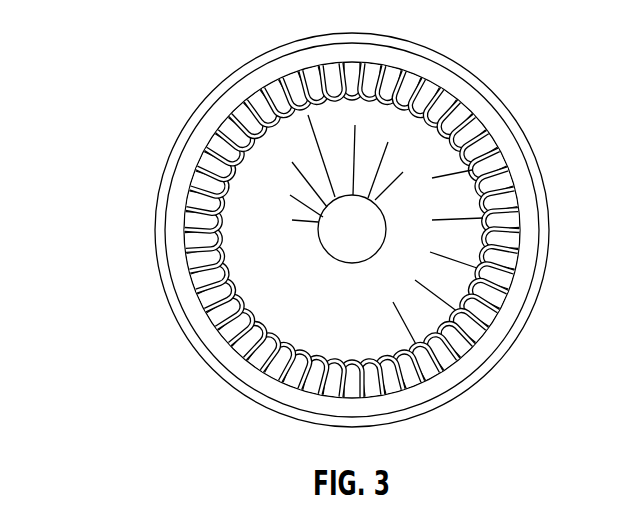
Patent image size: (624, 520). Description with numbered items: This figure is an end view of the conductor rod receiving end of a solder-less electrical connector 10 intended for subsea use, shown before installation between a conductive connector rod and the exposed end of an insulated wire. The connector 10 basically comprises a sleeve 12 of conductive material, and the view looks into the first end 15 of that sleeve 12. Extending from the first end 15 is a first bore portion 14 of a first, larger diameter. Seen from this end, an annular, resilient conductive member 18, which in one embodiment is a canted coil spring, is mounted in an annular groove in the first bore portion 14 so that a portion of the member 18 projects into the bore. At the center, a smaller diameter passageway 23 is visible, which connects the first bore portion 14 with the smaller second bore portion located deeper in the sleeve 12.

The solder-less electrical connector 10 is at (107, 54).
The sleeve 12 is at (541, 161).
The first bore portion 14 is at (302, 357).
The first end 15 is at (505, 322).
The resilient conductive member 18 is at (478, 189).
The passageway 23 is at (350, 246).